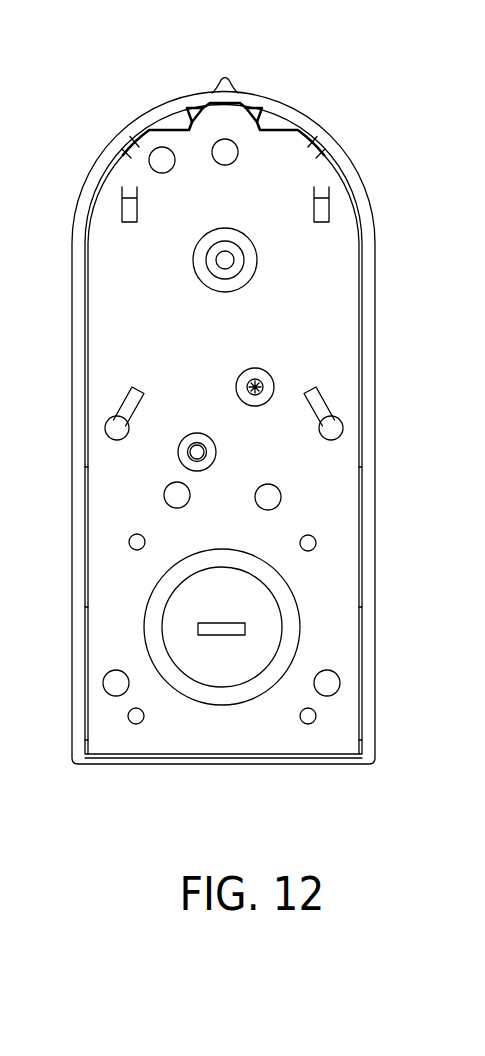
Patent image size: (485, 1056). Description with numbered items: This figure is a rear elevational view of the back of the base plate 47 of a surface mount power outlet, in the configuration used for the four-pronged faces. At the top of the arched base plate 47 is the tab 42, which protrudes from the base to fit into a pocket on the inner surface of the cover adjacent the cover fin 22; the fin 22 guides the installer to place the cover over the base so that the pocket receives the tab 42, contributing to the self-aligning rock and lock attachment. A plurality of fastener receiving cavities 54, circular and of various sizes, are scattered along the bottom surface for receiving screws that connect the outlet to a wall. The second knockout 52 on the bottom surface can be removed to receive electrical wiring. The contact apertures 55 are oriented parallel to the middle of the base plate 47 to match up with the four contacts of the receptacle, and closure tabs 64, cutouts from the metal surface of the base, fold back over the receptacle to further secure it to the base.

The cover fin 22 is at (227, 77).
The tab 42 is at (223, 127).
The base plate 47 is at (241, 338).
The second knockout 52 is at (234, 612).
The fastener receiving cavities 54 is at (232, 152).
The contact apertures 55 is at (128, 207).
The closure tabs 64 is at (124, 406).